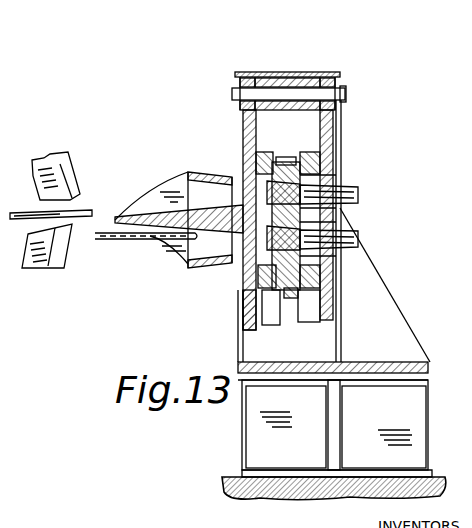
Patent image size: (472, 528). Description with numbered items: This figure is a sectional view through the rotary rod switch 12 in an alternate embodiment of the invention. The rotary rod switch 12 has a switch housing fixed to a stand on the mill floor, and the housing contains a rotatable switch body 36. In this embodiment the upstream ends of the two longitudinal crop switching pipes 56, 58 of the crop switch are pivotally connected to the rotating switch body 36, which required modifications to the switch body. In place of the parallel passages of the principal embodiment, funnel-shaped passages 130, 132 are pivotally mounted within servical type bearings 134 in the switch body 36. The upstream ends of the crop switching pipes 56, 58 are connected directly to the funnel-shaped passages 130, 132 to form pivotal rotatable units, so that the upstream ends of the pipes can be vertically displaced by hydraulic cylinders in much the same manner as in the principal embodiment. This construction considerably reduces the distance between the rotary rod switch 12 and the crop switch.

The rotary rod switch 12 is at (294, 67).
The switch body 36 is at (248, 322).
The crop switching pipe 56 is at (346, 188).
The crop switching pipe 58 is at (362, 241).
The funnel-shaped passage 130 is at (229, 182).
The funnel-shaped passage 132 is at (229, 261).
The servical type bearings 134 is at (279, 160).